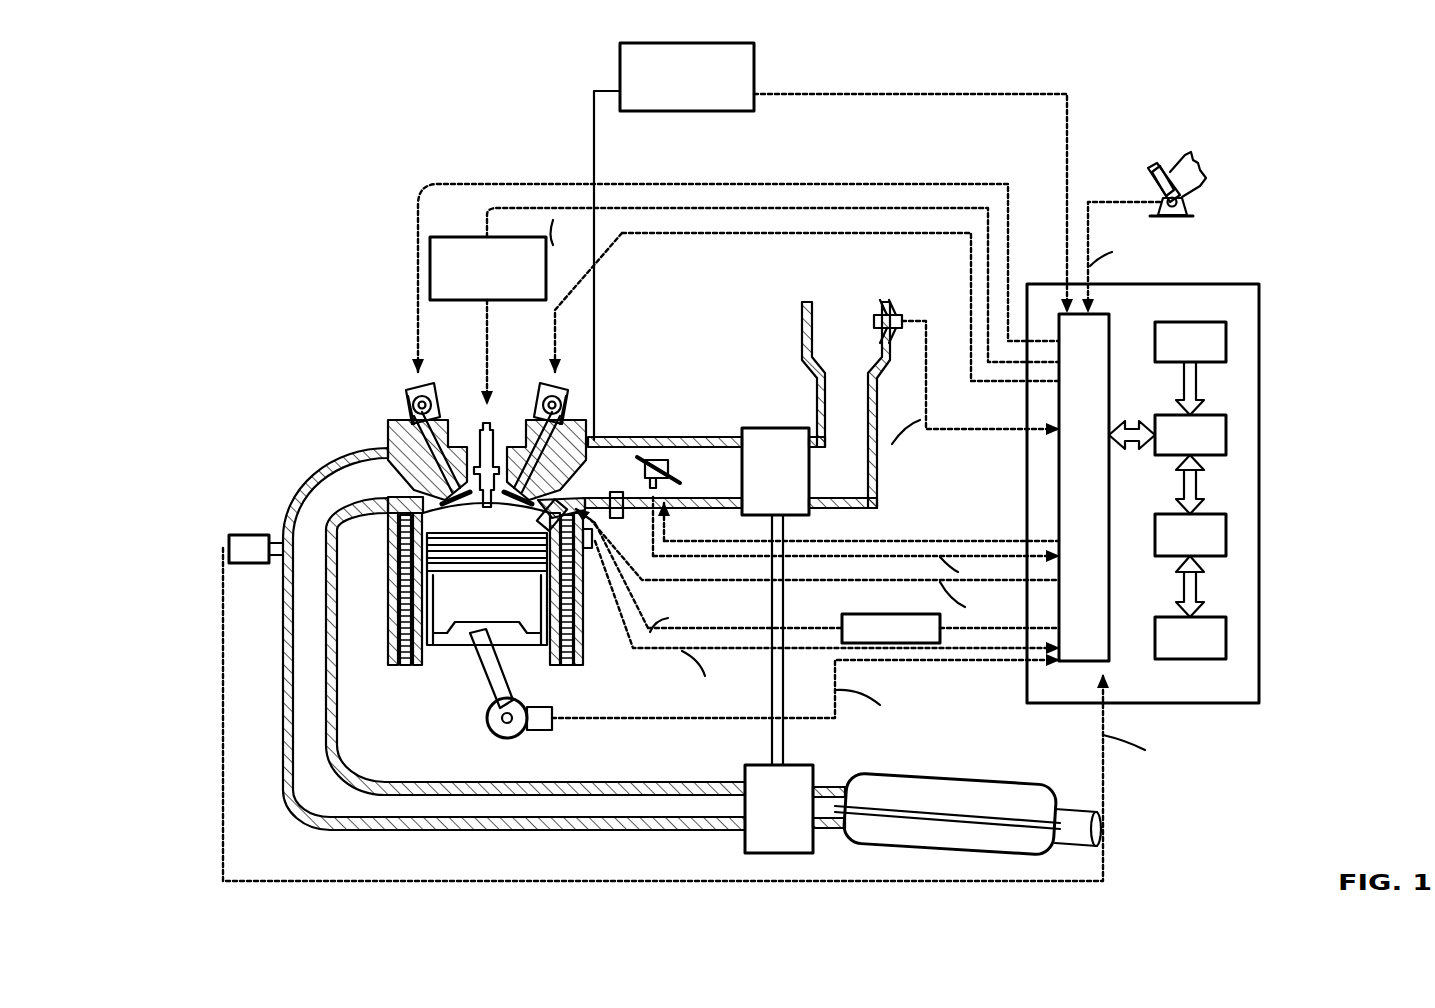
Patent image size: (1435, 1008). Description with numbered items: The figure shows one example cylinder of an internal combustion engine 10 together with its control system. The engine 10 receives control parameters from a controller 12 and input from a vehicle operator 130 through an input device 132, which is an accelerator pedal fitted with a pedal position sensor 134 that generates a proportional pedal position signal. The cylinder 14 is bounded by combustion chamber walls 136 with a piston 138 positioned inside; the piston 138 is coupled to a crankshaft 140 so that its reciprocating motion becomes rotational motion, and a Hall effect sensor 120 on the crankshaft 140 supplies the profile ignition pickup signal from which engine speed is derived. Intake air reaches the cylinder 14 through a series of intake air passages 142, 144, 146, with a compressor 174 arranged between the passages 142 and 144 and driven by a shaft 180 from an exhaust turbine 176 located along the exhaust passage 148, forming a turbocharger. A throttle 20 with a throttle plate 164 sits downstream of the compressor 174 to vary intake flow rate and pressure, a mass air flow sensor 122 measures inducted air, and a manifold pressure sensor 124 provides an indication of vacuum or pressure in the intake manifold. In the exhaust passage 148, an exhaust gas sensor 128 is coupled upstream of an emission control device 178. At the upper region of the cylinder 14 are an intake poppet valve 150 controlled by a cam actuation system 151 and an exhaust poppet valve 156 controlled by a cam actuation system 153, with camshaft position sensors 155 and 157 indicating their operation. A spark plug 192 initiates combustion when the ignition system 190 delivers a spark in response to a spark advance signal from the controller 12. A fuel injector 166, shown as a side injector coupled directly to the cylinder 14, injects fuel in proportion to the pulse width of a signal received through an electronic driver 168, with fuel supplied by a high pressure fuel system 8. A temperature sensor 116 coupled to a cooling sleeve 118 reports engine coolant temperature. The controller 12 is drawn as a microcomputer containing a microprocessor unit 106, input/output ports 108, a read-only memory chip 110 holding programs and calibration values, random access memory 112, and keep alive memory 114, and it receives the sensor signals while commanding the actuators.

The high pressure fuel system 8 is at (754, 55).
The internal combustion engine 10 is at (220, 125).
The controller 12 is at (1259, 290).
The cylinder 14 is at (390, 540).
The throttle 20 is at (658, 458).
The microprocessor unit 106 is at (1226, 432).
The input/output ports 108 is at (1109, 322).
The read-only memory chip 110 is at (1226, 337).
The random access memory 112 is at (1226, 532).
The keep alive memory 114 is at (1226, 636).
The temperature sensor 116 is at (590, 550).
The cooling sleeve 118 is at (584, 560).
The Hall effect sensor 120 is at (547, 732).
The mass air flow sensor 122 is at (905, 310).
The manifold pressure sensor 124 is at (618, 518).
The exhaust gas sensor 128 is at (230, 538).
The vehicle operator 130 is at (1200, 166).
The input device 132 is at (1153, 178).
The pedal position sensor 134 is at (1192, 210).
The combustion chamber walls 136 is at (425, 665).
The piston 138 is at (475, 640).
The crankshaft 140 is at (494, 736).
The intake air passage 142 is at (864, 351).
The intake air passage 144 is at (728, 483).
The intake air passage 146 is at (627, 483).
The exhaust passage 148 is at (371, 492).
The intake poppet valve 150 is at (505, 455).
The cam actuation system 151 is at (548, 384).
The cam actuation system 153 is at (428, 384).
The camshaft position sensor 155 is at (567, 407).
The exhaust poppet valve 156 is at (442, 492).
The camshaft position sensor 157 is at (406, 396).
The throttle plate 164 is at (637, 457).
The fuel injector 166 is at (637, 554).
The electronic driver 168 is at (845, 614).
The compressor 174 is at (763, 428).
The exhaust turbine 176 is at (745, 838).
The emission control device 178 is at (1002, 790).
The shaft 180 is at (783, 728).
The ignition system 190 is at (440, 237).
The spark plug 192 is at (478, 450).